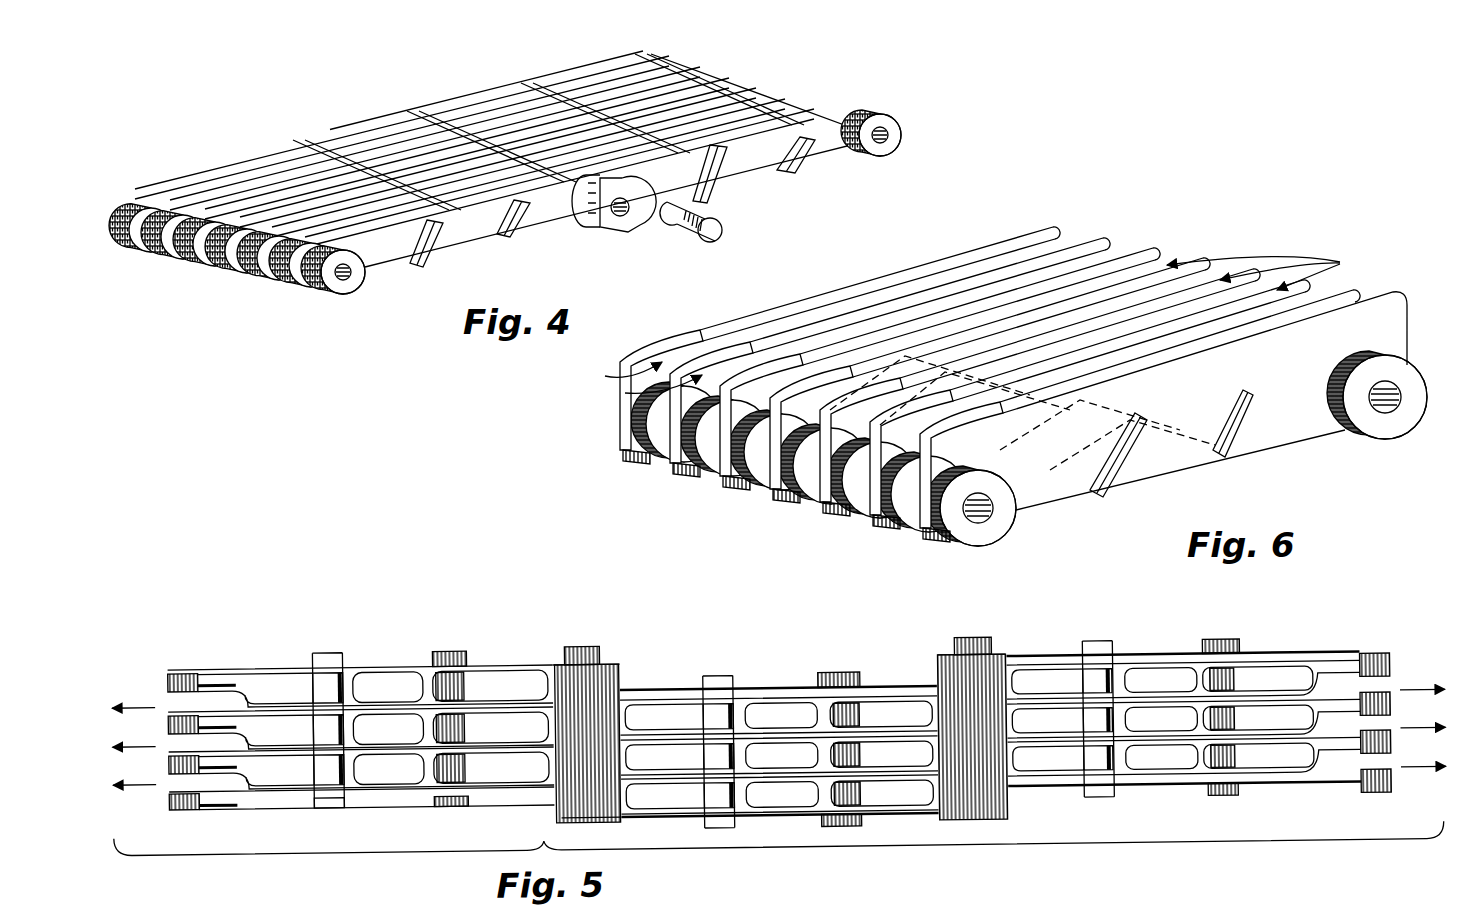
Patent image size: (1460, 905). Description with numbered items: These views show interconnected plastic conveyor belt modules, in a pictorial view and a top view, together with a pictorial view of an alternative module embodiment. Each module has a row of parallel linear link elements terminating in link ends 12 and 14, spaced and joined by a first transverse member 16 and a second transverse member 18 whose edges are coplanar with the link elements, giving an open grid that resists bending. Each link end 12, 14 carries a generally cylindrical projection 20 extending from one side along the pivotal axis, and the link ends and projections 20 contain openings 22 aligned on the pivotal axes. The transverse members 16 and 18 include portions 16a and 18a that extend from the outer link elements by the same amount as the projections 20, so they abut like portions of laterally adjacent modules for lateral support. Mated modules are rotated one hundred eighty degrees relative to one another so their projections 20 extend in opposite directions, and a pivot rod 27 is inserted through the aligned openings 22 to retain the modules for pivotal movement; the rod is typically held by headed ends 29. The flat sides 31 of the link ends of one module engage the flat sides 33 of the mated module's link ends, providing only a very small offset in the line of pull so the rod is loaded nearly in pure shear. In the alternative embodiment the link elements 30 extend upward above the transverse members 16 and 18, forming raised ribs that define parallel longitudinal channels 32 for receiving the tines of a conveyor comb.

In FIG. 4, the link end 12 is at (316, 292).
In FIG. 6, the link end 12 is at (927, 540).
In FIG. 5, the link end 12 is at (167, 808).
In FIG. 4, the link end 14 is at (627, 183).
In FIG. 6, the link end 14 is at (1420, 378).
In FIG. 5, the link end 14 is at (622, 793).
In FIG. 4, the first transverse member 16 is at (252, 166).
In FIG. 6, the first transverse member 16 is at (1013, 384).
In FIG. 5, the first transverse member 16 is at (345, 800).
In FIG. 4, the portion of transverse member 16a is at (433, 258).
In FIG. 6, the portion of transverse member 16a is at (1113, 488).
In FIG. 4, the second transverse member 18 is at (320, 147).
In FIG. 5, the second transverse member 18 is at (450, 808).
In FIG. 4, the portion of transverse member 18a is at (527, 232).
In FIG. 6, the portion of transverse member 18a is at (1245, 425).
In FIG. 4, the cylindrical projection 20 is at (365, 273).
In FIG. 6, the cylindrical projection 20 is at (972, 538).
In FIG. 5, the cylindrical projection 20 is at (560, 672).
In FIG. 4, the opening 22 is at (888, 127).
In FIG. 6, the opening 22 is at (1005, 525).
In FIG. 4, the pivot rod 27 is at (713, 235).
In FIG. 5, the pivot rod 27 is at (583, 655).
In FIG. 5, the headed end 29 is at (608, 832).
In FIG. 6, the link element 30 is at (1283, 422).
In FIG. 5, the flat side 31 is at (543, 745).
In FIG. 6, the longitudinal channel 32 is at (979, 322).
In FIG. 5, the flat side 33 is at (630, 709).